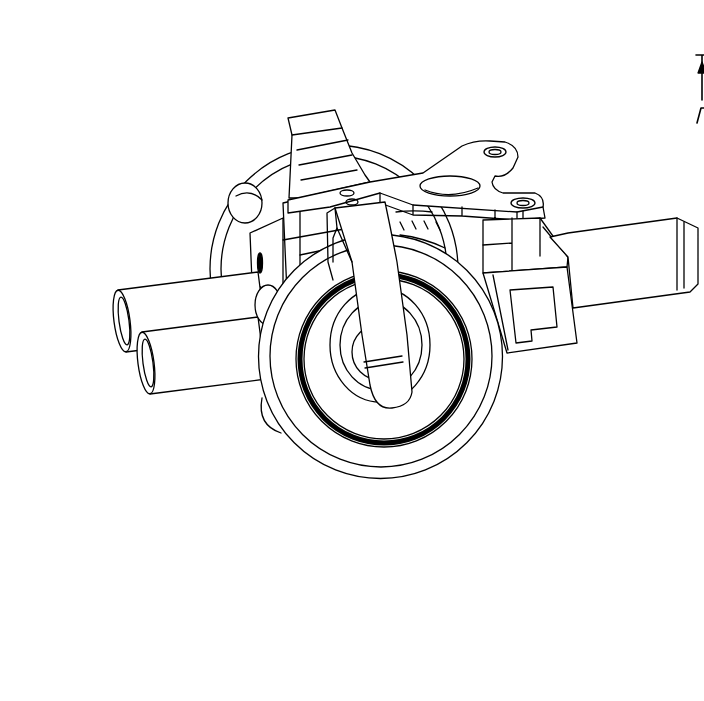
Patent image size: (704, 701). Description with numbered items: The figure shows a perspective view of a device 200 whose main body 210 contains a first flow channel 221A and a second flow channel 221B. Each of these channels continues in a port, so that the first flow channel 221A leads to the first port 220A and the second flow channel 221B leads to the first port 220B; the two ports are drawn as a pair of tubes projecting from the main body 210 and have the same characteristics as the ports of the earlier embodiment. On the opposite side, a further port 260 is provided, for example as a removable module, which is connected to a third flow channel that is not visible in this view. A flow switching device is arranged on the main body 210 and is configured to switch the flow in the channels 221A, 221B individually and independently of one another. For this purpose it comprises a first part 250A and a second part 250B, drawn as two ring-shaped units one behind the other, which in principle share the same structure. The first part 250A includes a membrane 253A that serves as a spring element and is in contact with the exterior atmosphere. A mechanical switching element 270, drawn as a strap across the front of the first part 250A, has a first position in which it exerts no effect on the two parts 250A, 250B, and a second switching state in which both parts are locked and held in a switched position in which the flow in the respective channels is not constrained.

The device 200 is at (503, 86).
The main body 210 is at (532, 322).
The first port 220A is at (180, 382).
The first port 220B is at (180, 290).
The first flow channel 221A is at (142, 370).
The second flow channel 221B is at (118, 326).
The first part of the switching device 250A is at (331, 472).
The second part of the switching device 250B is at (233, 178).
The membrane 253A is at (432, 395).
The port 260 is at (639, 216).
The mechanical switching element 270 is at (374, 296).